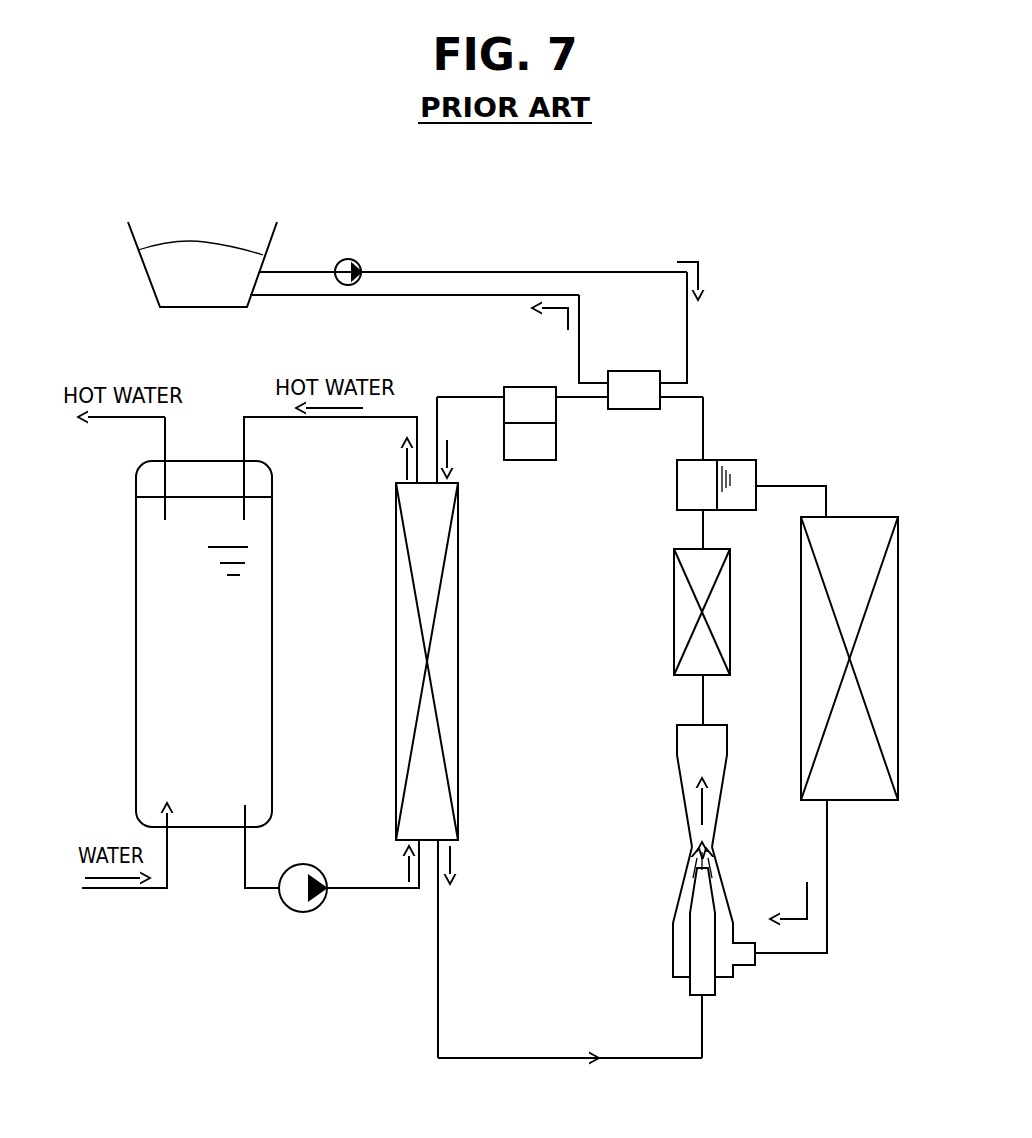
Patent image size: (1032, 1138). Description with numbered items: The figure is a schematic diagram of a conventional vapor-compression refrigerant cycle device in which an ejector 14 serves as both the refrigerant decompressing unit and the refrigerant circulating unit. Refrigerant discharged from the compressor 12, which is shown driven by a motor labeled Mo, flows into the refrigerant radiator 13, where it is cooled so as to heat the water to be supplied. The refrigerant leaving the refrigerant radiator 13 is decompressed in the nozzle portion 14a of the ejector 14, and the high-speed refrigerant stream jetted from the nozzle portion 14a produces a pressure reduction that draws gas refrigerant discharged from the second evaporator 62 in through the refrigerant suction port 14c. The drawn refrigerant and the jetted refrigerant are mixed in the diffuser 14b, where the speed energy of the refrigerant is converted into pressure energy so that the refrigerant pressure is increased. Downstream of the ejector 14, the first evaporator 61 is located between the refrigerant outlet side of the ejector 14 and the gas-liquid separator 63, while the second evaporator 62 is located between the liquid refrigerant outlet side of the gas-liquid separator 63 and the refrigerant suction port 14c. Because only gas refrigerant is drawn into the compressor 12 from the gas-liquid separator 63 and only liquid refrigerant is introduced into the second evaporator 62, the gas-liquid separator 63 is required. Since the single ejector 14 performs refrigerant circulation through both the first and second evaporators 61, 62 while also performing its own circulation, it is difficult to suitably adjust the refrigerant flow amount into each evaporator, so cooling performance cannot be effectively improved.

The compressor 12 is at (518, 387).
The motor Mo is at (514, 460).
The refrigerant radiator 13 is at (458, 568).
The ejector 14 is at (698, 871).
The nozzle portion 14a is at (700, 902).
The diffuser 14b is at (677, 797).
The refrigerant suction port 14c is at (745, 966).
The first evaporator 61 is at (674, 623).
The second evaporator 62 is at (801, 705).
The gas-liquid separator 63 is at (740, 460).